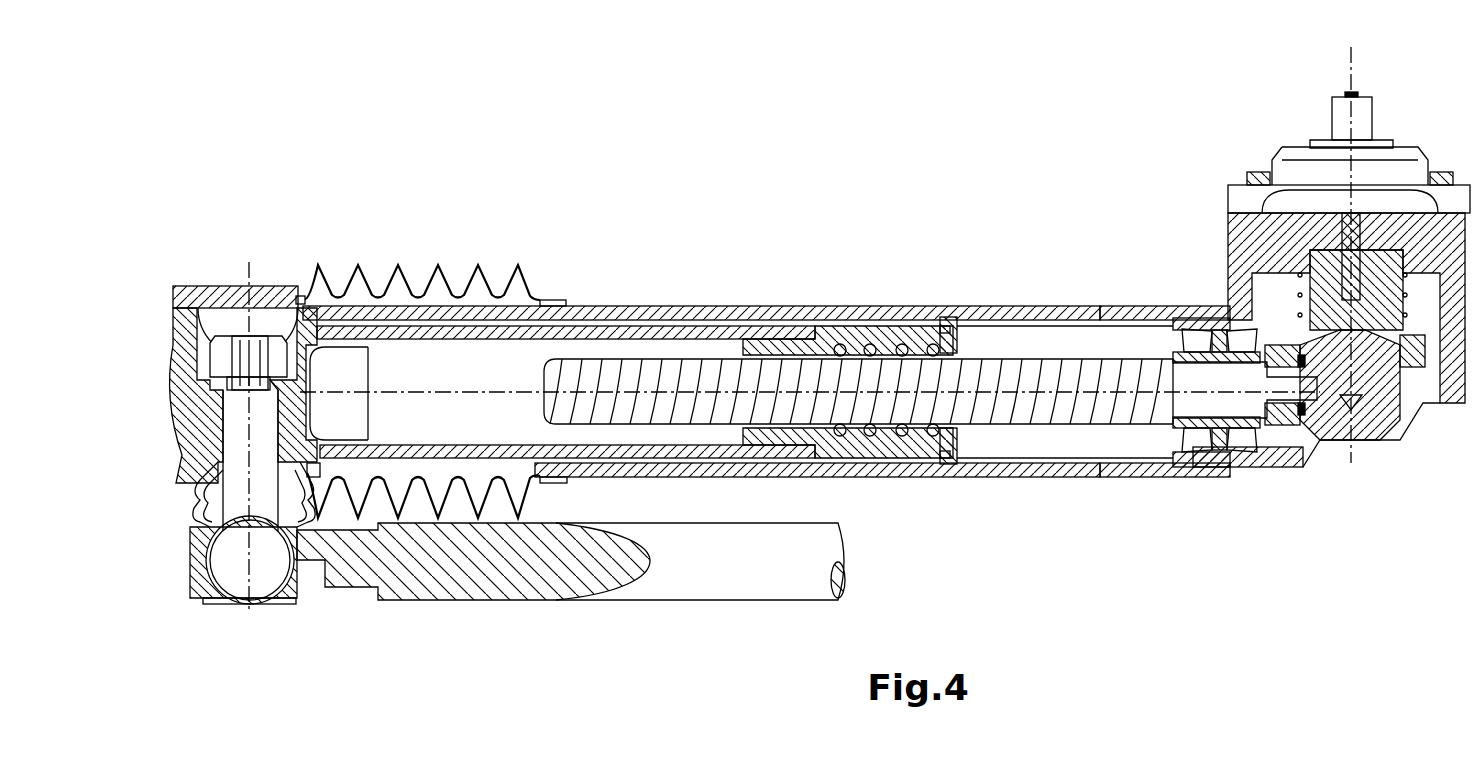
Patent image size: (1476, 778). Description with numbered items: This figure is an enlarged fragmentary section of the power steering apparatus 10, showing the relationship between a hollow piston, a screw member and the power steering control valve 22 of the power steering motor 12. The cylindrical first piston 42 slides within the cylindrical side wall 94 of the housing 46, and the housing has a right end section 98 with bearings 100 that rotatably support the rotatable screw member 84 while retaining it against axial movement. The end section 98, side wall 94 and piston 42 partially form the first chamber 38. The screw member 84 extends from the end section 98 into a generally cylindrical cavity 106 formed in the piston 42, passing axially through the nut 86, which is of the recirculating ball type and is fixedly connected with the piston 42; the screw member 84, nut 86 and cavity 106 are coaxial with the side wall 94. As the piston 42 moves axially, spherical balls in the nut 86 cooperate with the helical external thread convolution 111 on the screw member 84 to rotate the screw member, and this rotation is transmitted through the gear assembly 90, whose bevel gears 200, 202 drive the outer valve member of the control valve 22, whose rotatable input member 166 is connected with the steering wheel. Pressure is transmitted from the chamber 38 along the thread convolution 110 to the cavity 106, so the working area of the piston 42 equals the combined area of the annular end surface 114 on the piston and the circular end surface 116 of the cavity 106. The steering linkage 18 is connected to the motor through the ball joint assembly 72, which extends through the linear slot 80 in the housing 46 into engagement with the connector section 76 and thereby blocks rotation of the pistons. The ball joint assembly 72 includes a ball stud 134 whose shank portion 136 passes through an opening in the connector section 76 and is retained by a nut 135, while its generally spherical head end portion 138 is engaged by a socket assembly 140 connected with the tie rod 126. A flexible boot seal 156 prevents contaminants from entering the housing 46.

The power steering apparatus 10 is at (749, 127).
The power steering motor 12 is at (838, 207).
The steering linkage 18 is at (444, 616).
The power steering control valve 22 is at (1269, 158).
The first chamber 38 is at (1083, 332).
The first piston 42 is at (870, 326).
The housing 46 is at (1142, 306).
The ball joint assembly 72 is at (245, 617).
The connector section 76 is at (190, 347).
The linear slot 80 is at (440, 460).
The rotatable screw member 84 is at (1104, 431).
The nut 86 is at (885, 442).
The gear assembly 90 is at (1280, 298).
The side wall 94 is at (777, 312).
The end section 98 is at (1260, 462).
The bearings 100 is at (1245, 440).
The cylindrical cavity 106 is at (472, 367).
The thread convolution 110 is at (540, 357).
The helical external thread convolution 111 is at (1033, 410).
The annular end surface 114 is at (957, 337).
The circular end surface 116 is at (430, 287).
The tie rod 126 is at (653, 578).
The ball stud 134 is at (210, 600).
The nut 135 is at (221, 353).
The shank portion 136 is at (230, 430).
The spherical head end portion 138 is at (265, 552).
The socket assembly 140 is at (310, 563).
The flexible boot seal 156 is at (495, 505).
The rotatable input member 166 is at (1360, 95).
The bevel gear 200 is at (1288, 414).
The bevel gear 202 is at (1408, 360).